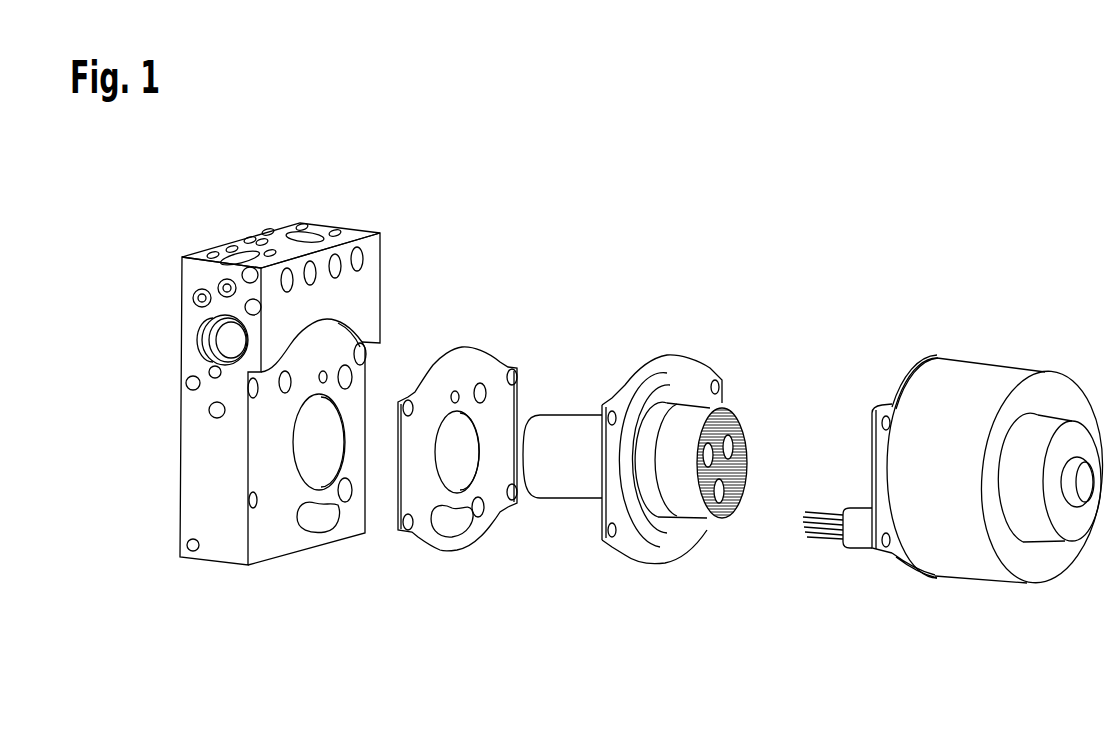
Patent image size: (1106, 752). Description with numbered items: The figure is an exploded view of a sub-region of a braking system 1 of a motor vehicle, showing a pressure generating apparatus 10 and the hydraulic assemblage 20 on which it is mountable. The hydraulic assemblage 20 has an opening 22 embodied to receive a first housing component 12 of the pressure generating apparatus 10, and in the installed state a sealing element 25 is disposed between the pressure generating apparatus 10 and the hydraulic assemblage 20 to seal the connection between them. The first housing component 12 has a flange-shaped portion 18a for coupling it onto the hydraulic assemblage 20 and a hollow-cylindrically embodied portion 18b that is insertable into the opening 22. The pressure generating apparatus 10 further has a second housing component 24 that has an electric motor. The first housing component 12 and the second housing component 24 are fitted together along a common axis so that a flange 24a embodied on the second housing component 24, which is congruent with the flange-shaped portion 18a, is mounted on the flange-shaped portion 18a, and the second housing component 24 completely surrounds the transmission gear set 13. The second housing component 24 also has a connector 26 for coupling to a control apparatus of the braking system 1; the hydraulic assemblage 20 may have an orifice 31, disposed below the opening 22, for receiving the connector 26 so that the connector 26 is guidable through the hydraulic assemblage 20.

The braking system 1 is at (713, 275).
The pressure generating apparatus 10 is at (1070, 608).
The first housing component 12 is at (713, 419).
The transmission gear set 13 is at (753, 445).
The flange-shaped portion 18a is at (697, 376).
The hollow-cylindrically embodied portion 18b is at (563, 485).
The hydraulic assemblage 20 is at (360, 297).
The opening 22 is at (309, 451).
The second housing component 24 is at (989, 446).
The flange 24a is at (892, 406).
The sealing element 25 is at (472, 360).
The connector 26 is at (818, 540).
The orifice 31 is at (322, 517).